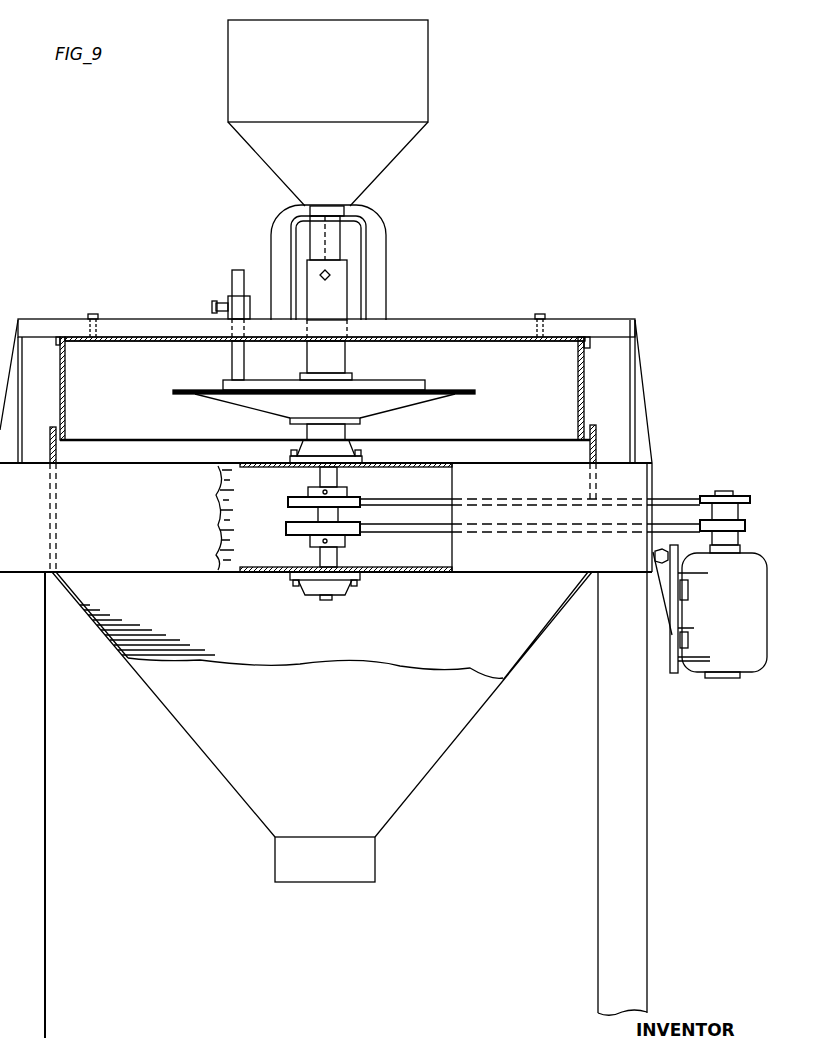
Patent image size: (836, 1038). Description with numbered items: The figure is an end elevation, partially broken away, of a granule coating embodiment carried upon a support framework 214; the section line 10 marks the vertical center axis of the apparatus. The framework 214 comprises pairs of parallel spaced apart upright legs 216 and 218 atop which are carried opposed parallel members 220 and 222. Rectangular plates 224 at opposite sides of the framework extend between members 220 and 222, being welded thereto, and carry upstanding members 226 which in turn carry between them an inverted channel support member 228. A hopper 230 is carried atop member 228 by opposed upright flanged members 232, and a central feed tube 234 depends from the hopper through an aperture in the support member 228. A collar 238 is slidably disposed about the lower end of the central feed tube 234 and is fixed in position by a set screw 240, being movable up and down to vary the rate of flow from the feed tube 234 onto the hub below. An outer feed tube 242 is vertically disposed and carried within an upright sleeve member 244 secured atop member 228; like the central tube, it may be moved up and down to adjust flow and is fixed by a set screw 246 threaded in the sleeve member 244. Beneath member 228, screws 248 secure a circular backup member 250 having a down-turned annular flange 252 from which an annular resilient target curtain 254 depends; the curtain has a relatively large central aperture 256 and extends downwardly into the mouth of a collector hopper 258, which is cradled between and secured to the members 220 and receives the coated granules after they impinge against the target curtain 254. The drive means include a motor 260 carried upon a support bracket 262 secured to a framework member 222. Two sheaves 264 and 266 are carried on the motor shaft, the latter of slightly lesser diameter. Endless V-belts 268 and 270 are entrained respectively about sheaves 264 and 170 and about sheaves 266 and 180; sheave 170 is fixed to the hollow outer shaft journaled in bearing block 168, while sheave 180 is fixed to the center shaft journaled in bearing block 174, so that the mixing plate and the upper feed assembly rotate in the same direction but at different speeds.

The section line 10 is at (318, 231).
The bearing block 168 is at (296, 462).
The sheave 170 is at (306, 496).
The bearing block 174 is at (290, 576).
The sheave 180 is at (292, 521).
The framework 214 is at (575, 722).
The upright legs 216 is at (604, 852).
The upright legs 218 is at (35, 846).
The parallel members 220 is at (128, 562).
The parallel members 222 is at (30, 530).
The rectangular plates 224 is at (44, 484).
The upstanding members 226 is at (6, 410).
The inverted channel support member 228 is at (468, 321).
The hopper 230 is at (412, 95).
The upright flanged members 232 is at (290, 210).
The central feed tube 234 is at (338, 245).
The collar 238 is at (338, 362).
The set screw 240 is at (322, 277).
The outer feed tube 242 is at (236, 363).
The sleeve member 244 is at (232, 290).
The set screw 246 is at (215, 307).
The screws 248 is at (100, 294).
The circular backup member 250 is at (513, 342).
The annular flange 252 is at (618, 352).
The target curtain 254 is at (62, 386).
The central aperture 256 is at (398, 338).
The collector hopper 258 is at (515, 660).
The motor 260 is at (746, 650).
The support bracket 262 is at (672, 632).
The sheave 264 is at (745, 495).
The sheave 266 is at (680, 573).
The V-belt 268 is at (376, 486).
The V-belt 270 is at (374, 528).